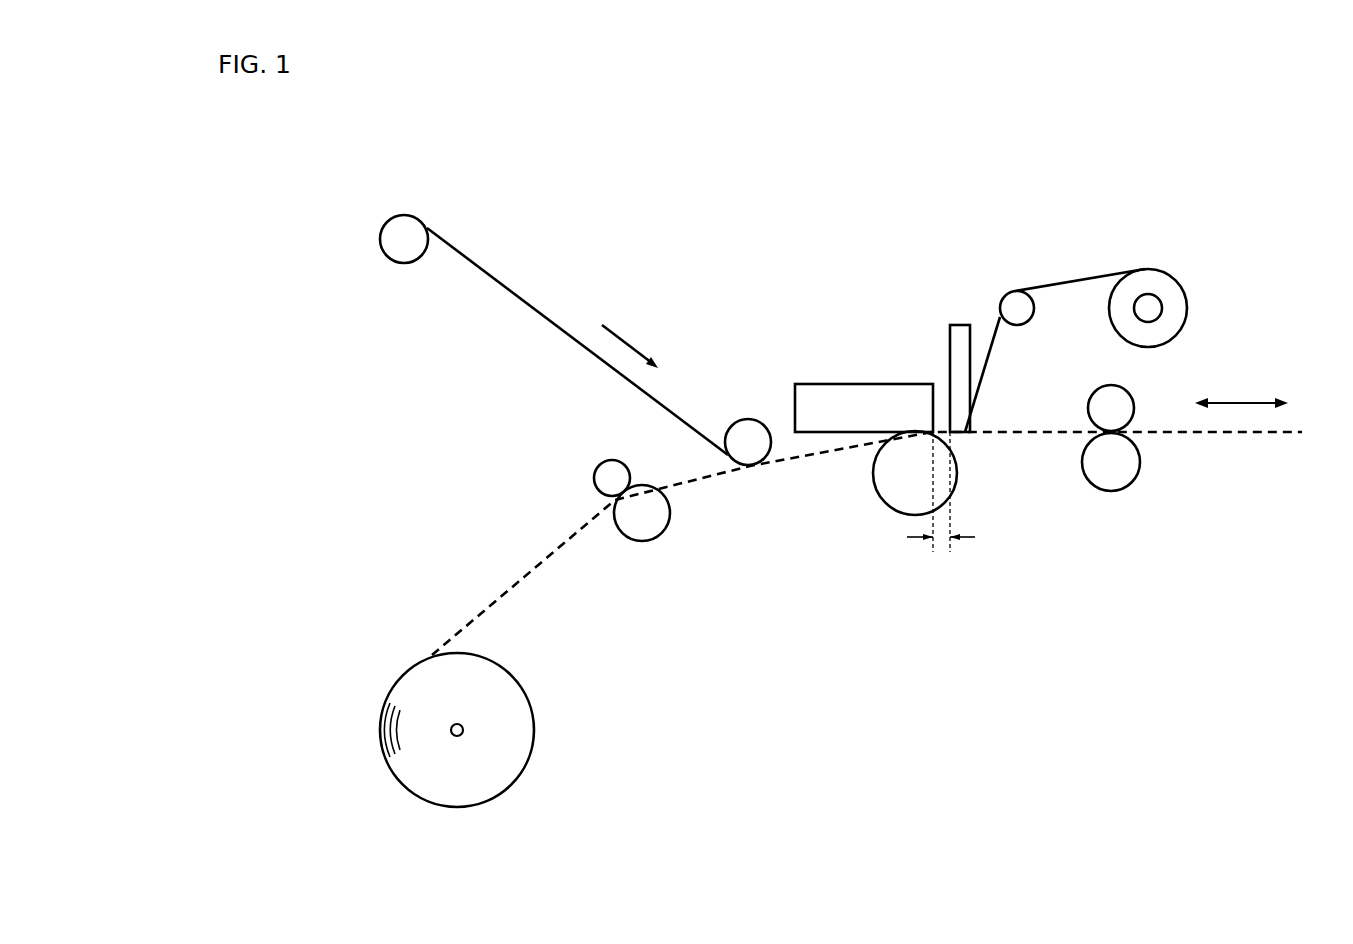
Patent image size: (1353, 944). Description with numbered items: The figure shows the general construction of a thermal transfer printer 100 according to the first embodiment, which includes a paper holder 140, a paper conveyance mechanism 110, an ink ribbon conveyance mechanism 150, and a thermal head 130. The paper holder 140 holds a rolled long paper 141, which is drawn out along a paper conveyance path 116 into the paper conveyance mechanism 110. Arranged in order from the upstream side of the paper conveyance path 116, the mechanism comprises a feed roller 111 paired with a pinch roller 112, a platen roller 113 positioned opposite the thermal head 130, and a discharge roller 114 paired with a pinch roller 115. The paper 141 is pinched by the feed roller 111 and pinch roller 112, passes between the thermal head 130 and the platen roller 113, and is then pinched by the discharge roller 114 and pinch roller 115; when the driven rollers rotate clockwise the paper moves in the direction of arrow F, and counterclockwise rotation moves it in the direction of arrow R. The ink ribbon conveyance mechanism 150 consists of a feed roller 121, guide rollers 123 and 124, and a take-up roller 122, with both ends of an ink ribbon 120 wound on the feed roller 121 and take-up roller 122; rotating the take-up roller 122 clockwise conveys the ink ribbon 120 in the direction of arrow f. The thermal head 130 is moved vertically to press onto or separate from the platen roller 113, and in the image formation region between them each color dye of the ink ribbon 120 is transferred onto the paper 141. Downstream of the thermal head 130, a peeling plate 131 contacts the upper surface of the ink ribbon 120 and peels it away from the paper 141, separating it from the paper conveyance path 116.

The thermal transfer printer 100 is at (1103, 160).
The paper conveyance mechanism 110 is at (1000, 682).
The feed roller 111 is at (643, 533).
The pinch roller 112 is at (605, 475).
The platen roller 113 is at (898, 493).
The discharge roller 114 is at (1112, 478).
The pinch roller 115 is at (1110, 397).
The paper conveyance path 116 is at (517, 580).
The ink ribbon 120 is at (515, 290).
The feed roller 121 is at (392, 230).
The take-up roller 122 is at (1147, 308).
The guide roller 123 is at (752, 458).
The guide roller 124 is at (1015, 302).
The thermal head 130 is at (835, 390).
The peeling plate 131 is at (957, 325).
The paper holder 140 is at (539, 749).
The paper 141 is at (535, 707).
The ink ribbon conveyance mechanism 150 is at (765, 237).